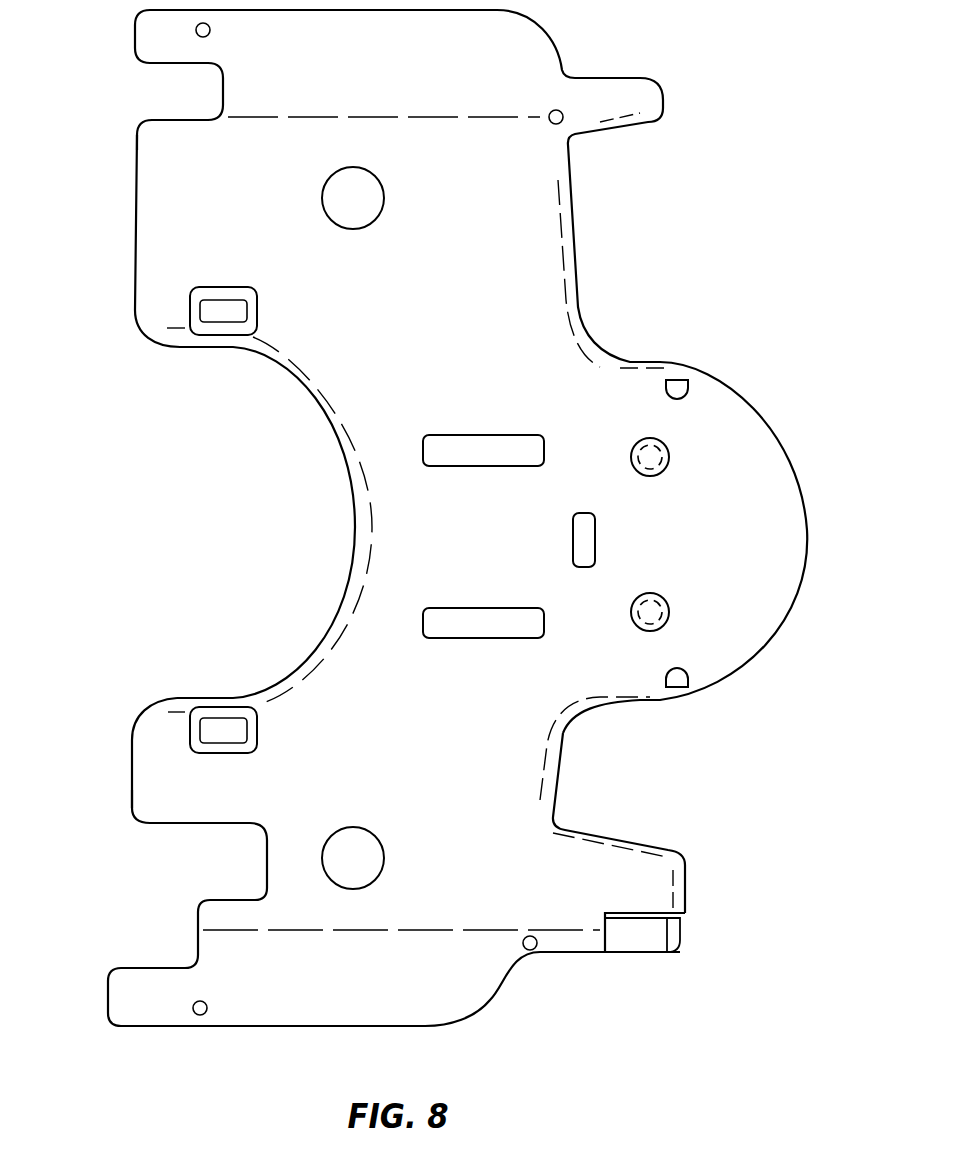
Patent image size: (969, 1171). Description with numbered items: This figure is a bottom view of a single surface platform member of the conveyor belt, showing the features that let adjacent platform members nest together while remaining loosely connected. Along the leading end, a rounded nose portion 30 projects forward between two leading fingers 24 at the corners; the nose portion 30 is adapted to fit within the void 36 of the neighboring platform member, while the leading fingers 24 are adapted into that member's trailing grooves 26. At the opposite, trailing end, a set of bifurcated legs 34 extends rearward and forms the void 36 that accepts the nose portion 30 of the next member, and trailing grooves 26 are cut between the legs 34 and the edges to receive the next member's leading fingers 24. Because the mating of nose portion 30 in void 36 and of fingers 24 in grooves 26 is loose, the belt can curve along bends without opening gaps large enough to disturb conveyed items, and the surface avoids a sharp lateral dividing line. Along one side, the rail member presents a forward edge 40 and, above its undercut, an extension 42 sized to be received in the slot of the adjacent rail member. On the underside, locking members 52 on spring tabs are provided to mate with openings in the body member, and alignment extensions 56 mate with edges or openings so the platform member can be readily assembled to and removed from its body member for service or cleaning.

The leading fingers 24 is at (662, 92).
The trailing grooves 26 is at (227, 90).
The nose portion 30 is at (780, 525).
The bifurcated legs 34 is at (135, 238).
The void 36 is at (358, 510).
The forward edge 40 is at (678, 935).
The extension 42 is at (653, 940).
The locking members 52 is at (462, 440).
The alignment extensions 56 is at (242, 311).